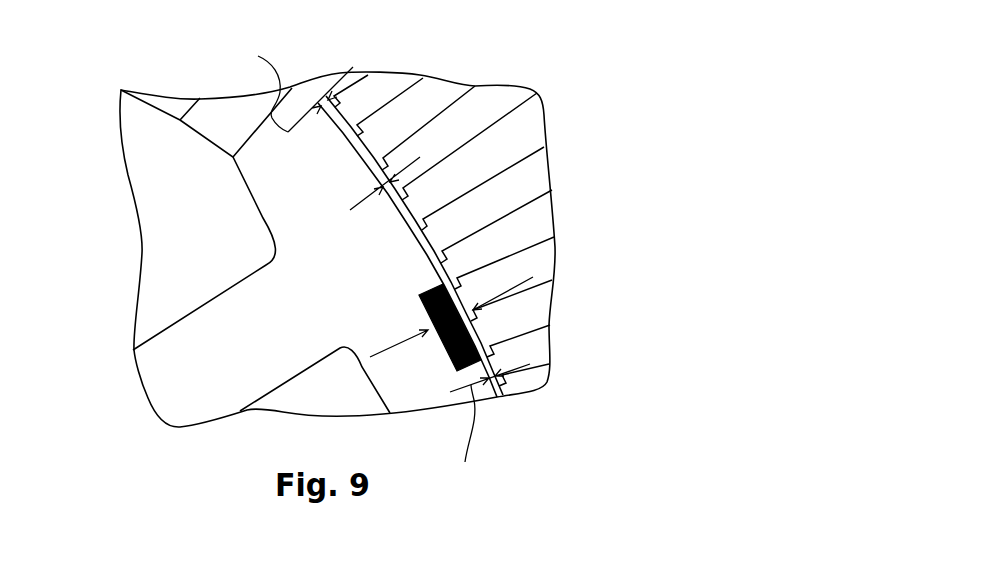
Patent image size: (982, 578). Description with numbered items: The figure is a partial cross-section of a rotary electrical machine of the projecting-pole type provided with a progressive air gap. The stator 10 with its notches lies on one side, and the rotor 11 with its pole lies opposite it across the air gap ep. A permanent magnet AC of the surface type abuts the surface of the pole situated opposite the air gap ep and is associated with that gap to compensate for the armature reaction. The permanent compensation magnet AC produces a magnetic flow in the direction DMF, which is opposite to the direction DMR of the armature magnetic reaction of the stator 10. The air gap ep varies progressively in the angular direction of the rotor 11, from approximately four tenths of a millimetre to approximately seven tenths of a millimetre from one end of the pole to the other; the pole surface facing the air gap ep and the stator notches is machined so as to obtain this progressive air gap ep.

The stator 10 is at (492, 100).
The rotor 11 is at (220, 335).
The permanent magnet AC is at (432, 340).
The progressive air gap ep is at (363, 200).
The direction of magnetic flow DMF is at (395, 345).
The direction of armature magnetic reaction DMR is at (500, 295).